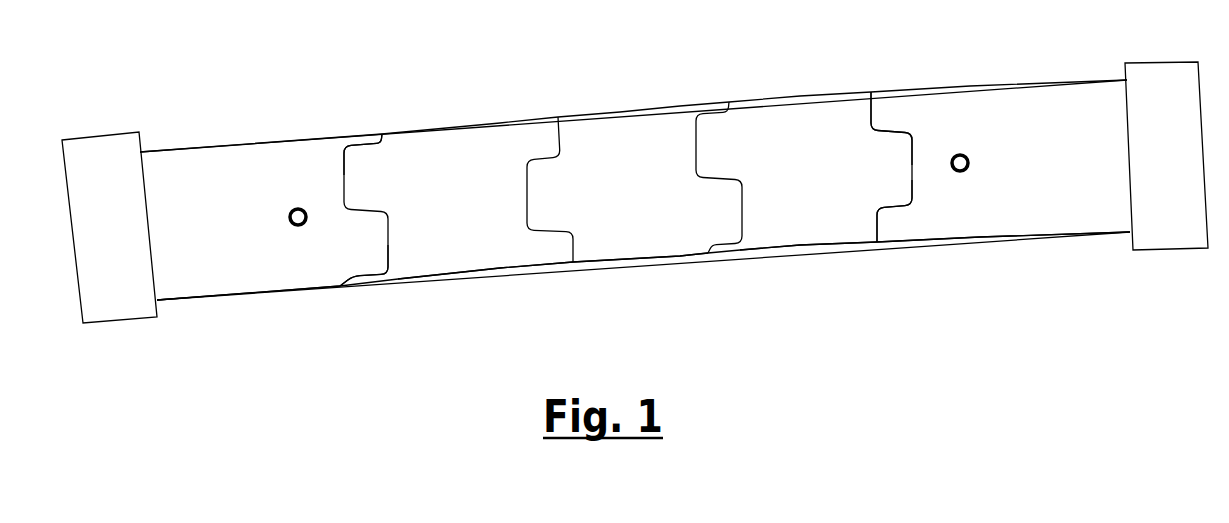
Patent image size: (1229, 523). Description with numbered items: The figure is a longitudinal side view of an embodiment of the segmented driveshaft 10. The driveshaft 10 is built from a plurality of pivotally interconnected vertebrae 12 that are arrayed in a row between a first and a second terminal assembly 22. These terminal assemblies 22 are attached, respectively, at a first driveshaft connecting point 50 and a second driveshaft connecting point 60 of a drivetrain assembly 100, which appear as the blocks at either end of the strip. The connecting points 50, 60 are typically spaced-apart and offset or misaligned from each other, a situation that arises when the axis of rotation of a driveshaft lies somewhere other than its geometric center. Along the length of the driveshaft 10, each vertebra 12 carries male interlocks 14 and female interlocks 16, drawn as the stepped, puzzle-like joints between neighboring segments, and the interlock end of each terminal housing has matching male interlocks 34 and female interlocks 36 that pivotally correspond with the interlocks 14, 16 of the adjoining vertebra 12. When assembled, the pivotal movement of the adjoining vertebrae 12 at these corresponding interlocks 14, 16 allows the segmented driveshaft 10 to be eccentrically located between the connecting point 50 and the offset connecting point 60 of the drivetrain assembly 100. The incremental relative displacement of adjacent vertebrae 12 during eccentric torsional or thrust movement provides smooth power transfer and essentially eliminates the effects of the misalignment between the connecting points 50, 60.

The segmented driveshaft 10 is at (640, 108).
The vertebra 12 is at (445, 158).
The male interlock 14 is at (368, 173).
The female interlock 16 is at (528, 190).
The terminal assembly 22 is at (255, 250).
The male interlock 34 is at (367, 248).
The female interlock 36 is at (343, 170).
The first driveshaft connecting point 50 is at (87, 236).
The second driveshaft connecting point 60 is at (1140, 156).
The drivetrain assembly 100 is at (755, 328).